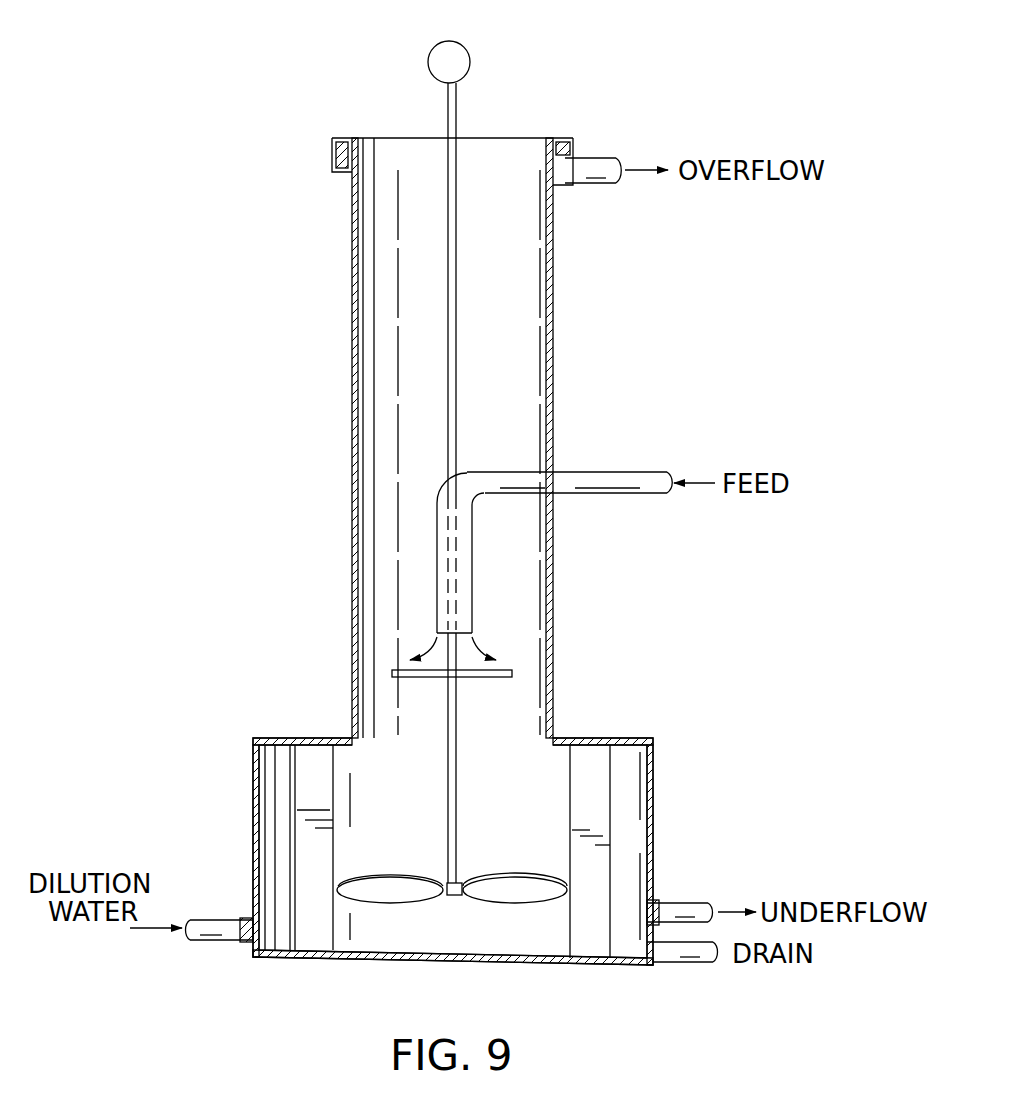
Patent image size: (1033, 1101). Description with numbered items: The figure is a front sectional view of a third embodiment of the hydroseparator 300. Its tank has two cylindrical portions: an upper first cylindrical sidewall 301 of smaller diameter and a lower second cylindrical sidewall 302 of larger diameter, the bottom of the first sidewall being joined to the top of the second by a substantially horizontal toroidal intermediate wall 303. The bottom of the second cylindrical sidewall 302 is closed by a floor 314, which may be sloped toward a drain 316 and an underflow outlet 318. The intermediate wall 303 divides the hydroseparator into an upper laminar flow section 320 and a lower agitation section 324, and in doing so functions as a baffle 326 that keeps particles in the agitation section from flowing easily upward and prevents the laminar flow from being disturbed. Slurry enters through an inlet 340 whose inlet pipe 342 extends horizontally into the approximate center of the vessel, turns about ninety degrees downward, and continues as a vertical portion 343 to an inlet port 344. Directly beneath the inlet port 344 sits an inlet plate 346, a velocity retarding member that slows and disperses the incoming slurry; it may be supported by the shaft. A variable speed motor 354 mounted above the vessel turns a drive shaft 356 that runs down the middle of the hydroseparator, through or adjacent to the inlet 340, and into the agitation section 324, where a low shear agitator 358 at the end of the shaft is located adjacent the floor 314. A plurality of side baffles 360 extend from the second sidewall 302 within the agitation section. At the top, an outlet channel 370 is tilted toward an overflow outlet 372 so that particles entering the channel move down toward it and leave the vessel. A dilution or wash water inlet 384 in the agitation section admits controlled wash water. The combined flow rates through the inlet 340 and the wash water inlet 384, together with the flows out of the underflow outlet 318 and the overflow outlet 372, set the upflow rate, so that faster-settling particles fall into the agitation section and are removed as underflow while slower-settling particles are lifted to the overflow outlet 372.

The hydroseparator 300 is at (232, 102).
The first cylindrical sidewall 301 is at (352, 320).
The second cylindrical sidewall 302 is at (255, 772).
The toroidal intermediate wall 303 is at (303, 738).
The floor 314 is at (518, 960).
The drain 316 is at (660, 963).
The underflow outlet 318 is at (663, 912).
The laminar flow section 320 is at (520, 340).
The agitation section 324 is at (550, 817).
The baffle 326 is at (598, 735).
The inlet 340 is at (435, 488).
The inlet pipe 342 is at (597, 478).
The vertical portion 343 is at (508, 548).
The inlet port 344 is at (470, 640).
The inlet plate 346 is at (510, 677).
The variable speed motor 354 is at (470, 50).
The drive shaft 356 is at (457, 272).
The low shear agitator 358 is at (383, 893).
The side baffles 360 is at (308, 802).
The outlet channel 370 is at (343, 152).
The overflow outlet 372 is at (578, 172).
The dilution or wash water inlet 384 is at (245, 930).